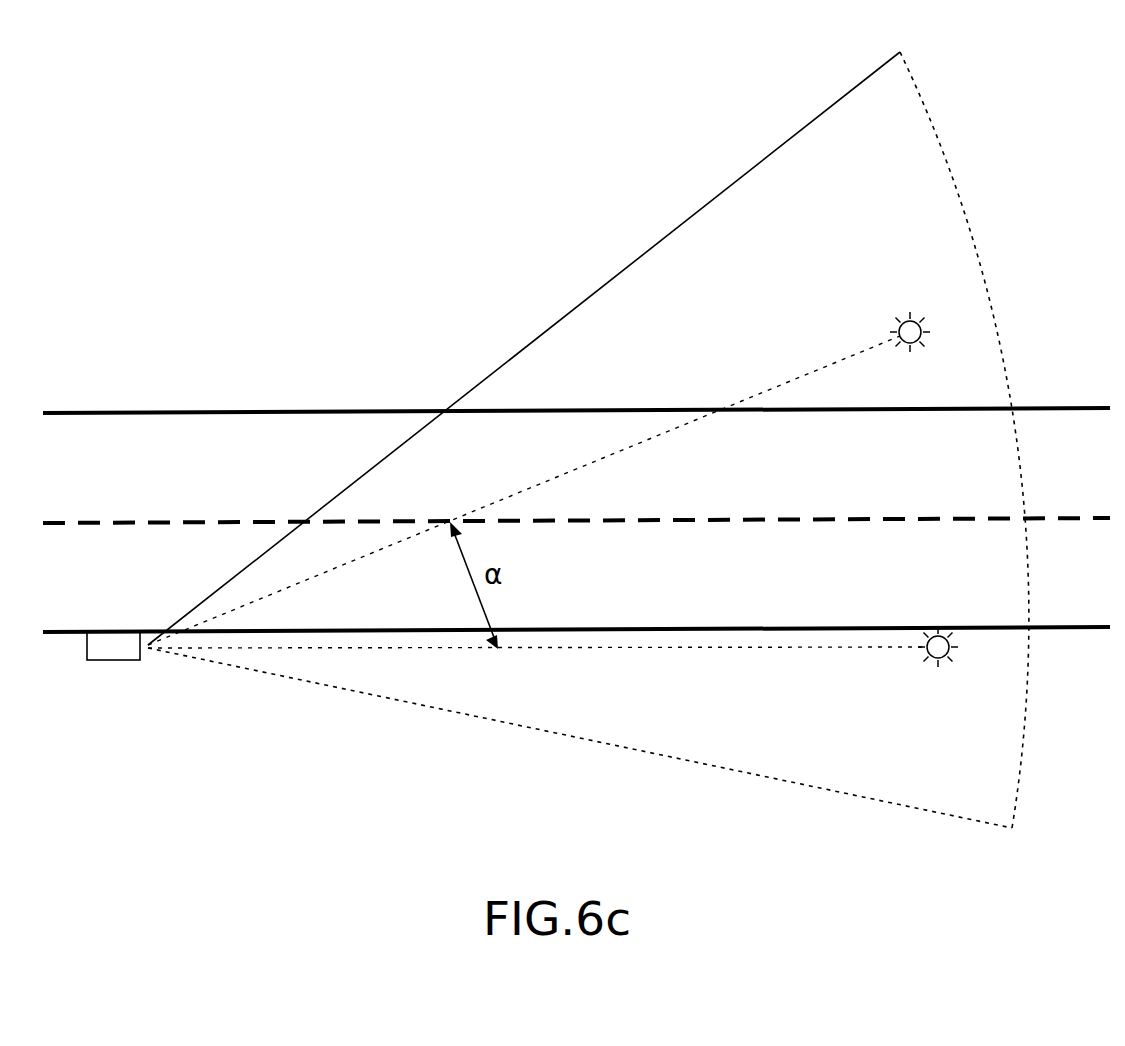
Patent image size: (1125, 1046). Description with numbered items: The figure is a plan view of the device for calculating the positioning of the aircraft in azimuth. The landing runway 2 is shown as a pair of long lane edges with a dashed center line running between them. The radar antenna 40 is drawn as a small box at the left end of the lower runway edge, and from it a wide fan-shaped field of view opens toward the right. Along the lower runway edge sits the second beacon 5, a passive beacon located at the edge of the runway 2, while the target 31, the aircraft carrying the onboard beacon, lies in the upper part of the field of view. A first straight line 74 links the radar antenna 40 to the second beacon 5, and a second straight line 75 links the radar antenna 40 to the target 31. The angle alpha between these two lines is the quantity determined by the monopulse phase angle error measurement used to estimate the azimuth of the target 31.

The landing runway 2 is at (45, 412).
The second beacon 5 is at (940, 668).
The target 31 is at (908, 320).
The radar antenna 40 is at (113, 661).
The first straight line 74 is at (643, 666).
The second straight line 75 is at (752, 370).